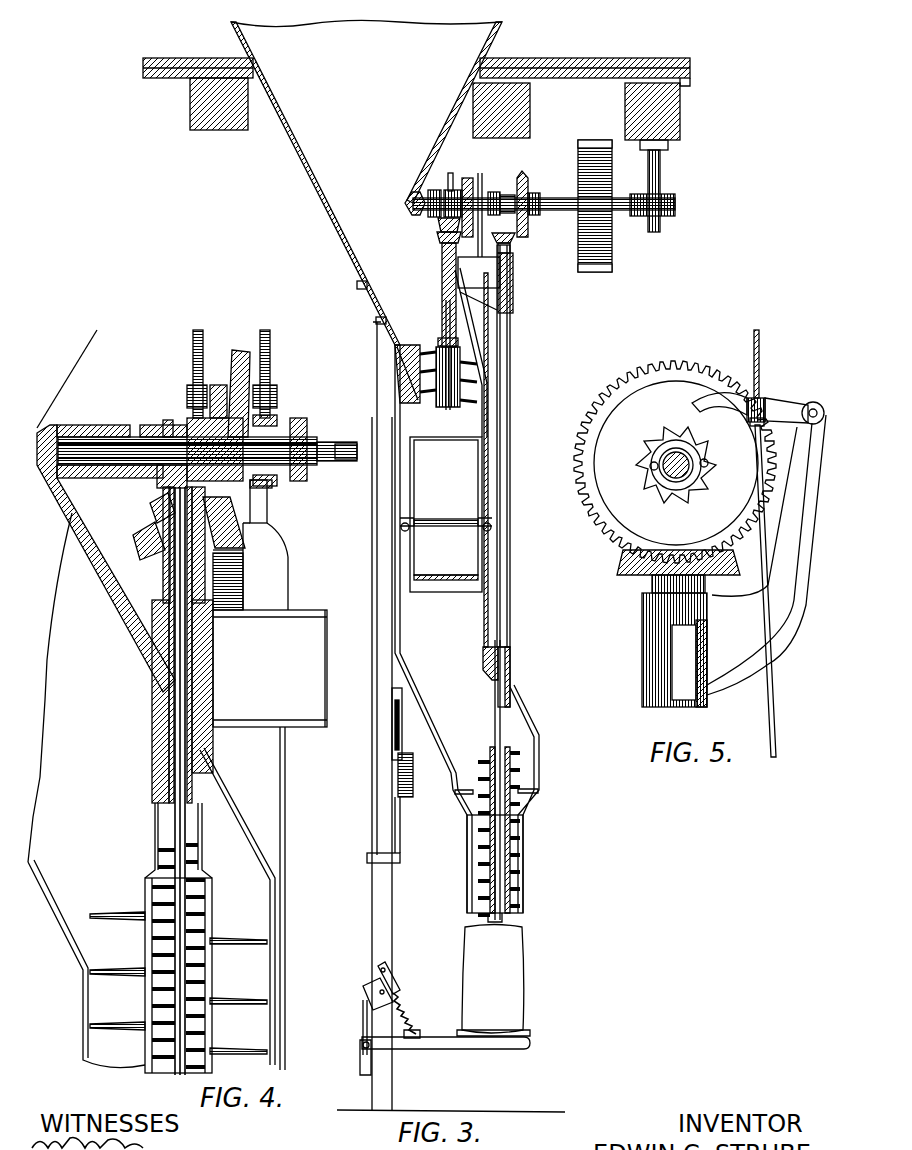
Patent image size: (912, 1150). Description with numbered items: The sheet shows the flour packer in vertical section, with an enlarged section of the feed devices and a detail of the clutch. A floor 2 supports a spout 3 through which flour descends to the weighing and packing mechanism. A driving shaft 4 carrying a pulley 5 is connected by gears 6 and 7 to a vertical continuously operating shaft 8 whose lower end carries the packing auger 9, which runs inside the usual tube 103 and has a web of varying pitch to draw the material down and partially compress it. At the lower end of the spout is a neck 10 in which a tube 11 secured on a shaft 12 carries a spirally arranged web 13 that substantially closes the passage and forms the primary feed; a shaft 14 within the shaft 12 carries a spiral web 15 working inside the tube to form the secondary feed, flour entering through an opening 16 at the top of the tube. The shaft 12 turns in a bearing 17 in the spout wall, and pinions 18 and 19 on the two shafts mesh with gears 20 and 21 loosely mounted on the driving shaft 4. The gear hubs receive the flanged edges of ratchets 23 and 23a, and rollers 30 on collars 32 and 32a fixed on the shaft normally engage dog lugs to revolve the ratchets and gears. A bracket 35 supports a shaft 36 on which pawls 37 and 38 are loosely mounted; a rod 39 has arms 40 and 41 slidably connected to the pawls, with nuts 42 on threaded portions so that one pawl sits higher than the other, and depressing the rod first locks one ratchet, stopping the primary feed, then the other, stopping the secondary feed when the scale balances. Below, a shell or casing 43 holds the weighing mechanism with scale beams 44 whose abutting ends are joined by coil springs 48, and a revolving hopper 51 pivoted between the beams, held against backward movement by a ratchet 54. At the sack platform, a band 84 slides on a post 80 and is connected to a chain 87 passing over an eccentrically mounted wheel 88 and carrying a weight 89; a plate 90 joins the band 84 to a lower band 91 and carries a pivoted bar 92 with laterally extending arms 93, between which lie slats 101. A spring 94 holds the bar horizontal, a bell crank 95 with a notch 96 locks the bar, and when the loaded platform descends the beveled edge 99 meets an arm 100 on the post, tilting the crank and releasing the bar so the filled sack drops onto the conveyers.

In FIG. 3, the floor 2 is at (578, 74).
In FIG. 3, the spout 3 is at (453, 768).
In FIG. 4, the spout 3 is at (86, 352).
In FIG. 3, the shaft 4 is at (622, 215).
In FIG. 4, the shaft 4 is at (340, 448).
In FIG. 5, the shaft 4 is at (675, 476).
In FIG. 3, the pulley 5 is at (606, 264).
In FIG. 3, the gear 6 is at (528, 178).
In FIG. 3, the gear 7 is at (516, 253).
In FIG. 3, the vertical continuously operating shaft 8 is at (508, 328).
In FIG. 3, the packing auger 9 is at (478, 778).
In FIG. 3, the neck 10 is at (447, 347).
In FIG. 4, the neck 10 is at (86, 790).
In FIG. 3, the tube 11 is at (426, 404).
In FIG. 4, the tube 11 is at (140, 940).
In FIG. 3, the shaft 12 is at (443, 318).
In FIG. 4, the shaft 12 is at (168, 757).
In FIG. 3, the spirally arranged web 13 is at (470, 405).
In FIG. 4, the spirally arranged web 13 is at (233, 940).
In FIG. 3, the shaft 14 is at (449, 336).
In FIG. 4, the shaft 14 is at (178, 725).
In FIG. 3, the spiral web 15 is at (452, 405).
In FIG. 4, the spiral web 15 is at (200, 860).
In FIG. 3, the opening 16 is at (458, 333).
In FIG. 4, the opening 16 is at (158, 827).
In FIG. 4, the bearing 17 is at (160, 643).
In FIG. 5, the bearing 17 is at (647, 622).
In FIG. 3, the pinion 18 is at (442, 245).
In FIG. 4, the pinion 18 is at (163, 530).
In FIG. 5, the pinion 18 is at (623, 568).
In FIG. 3, the pinion 19 is at (440, 232).
In FIG. 4, the pinion 19 is at (170, 497).
In FIG. 3, the gear 20 is at (470, 180).
In FIG. 4, the gear 20 is at (230, 363).
In FIG. 5, the gear 20 is at (640, 368).
In FIG. 3, the gear 21 is at (455, 188).
In FIG. 4, the gear 21 is at (212, 393).
In FIG. 4, the ratchet 23 is at (278, 418).
In FIG. 5, the ratchet 23 is at (657, 435).
In FIG. 4, the ratchet 23a is at (190, 418).
In FIG. 4, the rollers 30 is at (207, 451).
In FIG. 5, the rollers 30 is at (651, 466).
In FIG. 3, the collar 32 is at (510, 212).
In FIG. 4, the collar 32 is at (307, 424).
In FIG. 5, the collar 32 is at (692, 487).
In FIG. 3, the collar 32a is at (418, 214).
In FIG. 4, the collar 32a is at (163, 420).
In FIG. 4, the bracket 35 is at (236, 572).
In FIG. 5, the bracket 35 is at (795, 622).
In FIG. 4, the shaft 36 is at (276, 405).
In FIG. 5, the shaft 36 is at (814, 402).
In FIG. 3, the pawl 37 is at (492, 194).
In FIG. 4, the pawl 37 is at (272, 392).
In FIG. 5, the pawl 37 is at (790, 403).
In FIG. 3, the pawl 38 is at (430, 198).
In FIG. 4, the pawl 38 is at (190, 372).
In FIG. 5, the pawl 38 is at (760, 396).
In FIG. 3, the rod 39 is at (488, 366).
In FIG. 4, the rod 39 is at (289, 584).
In FIG. 5, the rod 39 is at (775, 722).
In FIG. 3, the arm 40 is at (483, 180).
In FIG. 4, the arm 40 is at (268, 510).
In FIG. 5, the arm 40 is at (765, 582).
In FIG. 3, the arm 41 is at (448, 180).
In FIG. 4, the arm 41 is at (197, 352).
In FIG. 5, the nuts 42 is at (754, 425).
In FIG. 3, the shell or casing 43 is at (400, 620).
In FIG. 3, the scale beams 44 is at (402, 520).
In FIG. 3, the coil springs 48 is at (401, 530).
In FIG. 3, the revolving hopper 51 is at (416, 488).
In FIG. 3, the ratchet 54 is at (488, 512).
In FIG. 3, the post 80 is at (377, 505).
In FIG. 3, the band 84 is at (368, 858).
In FIG. 3, the chain 87 is at (401, 820).
In FIG. 3, the eccentrically mounted wheel 88 is at (403, 745).
In FIG. 3, the weight 89 is at (413, 796).
In FIG. 3, the plate 90 is at (390, 890).
In FIG. 3, the band 91 is at (416, 1032).
In FIG. 3, the bar 92 is at (440, 1048).
In FIG. 3, the arms 93 is at (470, 1030).
In FIG. 3, the spring 94 is at (406, 1004).
In FIG. 3, the bell crank 95 is at (398, 988).
In FIG. 3, the notch 96 is at (360, 1046).
In FIG. 3, the beveled edge 99 is at (364, 988).
In FIG. 3, the arm 100 is at (362, 1010).
In FIG. 3, the slats 101 is at (514, 1038).
In FIG. 3, the tube 103 is at (525, 860).